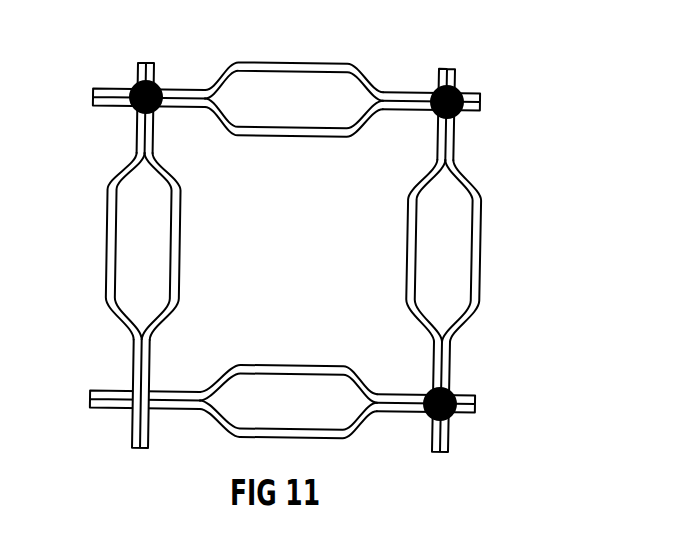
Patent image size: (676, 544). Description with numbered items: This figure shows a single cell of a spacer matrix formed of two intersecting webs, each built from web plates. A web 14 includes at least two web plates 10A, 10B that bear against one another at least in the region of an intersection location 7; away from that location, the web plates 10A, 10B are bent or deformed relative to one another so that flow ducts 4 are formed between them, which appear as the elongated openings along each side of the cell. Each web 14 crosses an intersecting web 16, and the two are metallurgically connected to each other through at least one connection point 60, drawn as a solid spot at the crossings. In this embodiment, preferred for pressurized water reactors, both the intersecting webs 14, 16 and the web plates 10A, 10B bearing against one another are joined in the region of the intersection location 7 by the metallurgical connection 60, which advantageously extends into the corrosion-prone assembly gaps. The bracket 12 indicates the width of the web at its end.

The connection point 60 is at (133, 84).
The web plate 10A is at (279, 64).
The web plate 10B is at (295, 137).
The web 14 is at (410, 92).
The strut width 12 is at (103, 97).
The flow duct 4 is at (296, 397).
The intersection location 7 is at (128, 410).
The intersecting web 16 is at (443, 367).